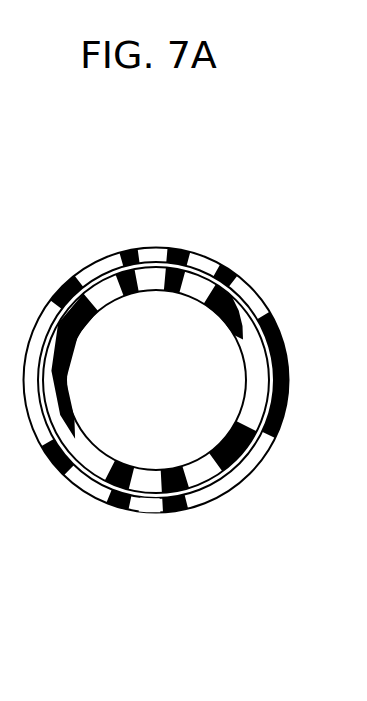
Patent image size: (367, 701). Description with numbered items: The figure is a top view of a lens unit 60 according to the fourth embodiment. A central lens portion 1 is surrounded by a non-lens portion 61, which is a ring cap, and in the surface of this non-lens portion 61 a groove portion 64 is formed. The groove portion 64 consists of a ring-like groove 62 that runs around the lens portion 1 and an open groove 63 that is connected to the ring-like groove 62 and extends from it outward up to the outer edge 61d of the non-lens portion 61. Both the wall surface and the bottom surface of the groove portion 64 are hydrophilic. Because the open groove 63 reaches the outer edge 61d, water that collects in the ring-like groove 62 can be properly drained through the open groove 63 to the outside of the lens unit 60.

The lens unit 60 is at (176, 196).
The outer edge of the non-lens portion 61d is at (282, 396).
The non-lens portion (ring cap) 61 is at (210, 492).
The lens portion 1 is at (210, 423).
The ring-like groove 62 is at (123, 505).
The open groove 63 is at (155, 500).
The groove portion 64 is at (165, 445).